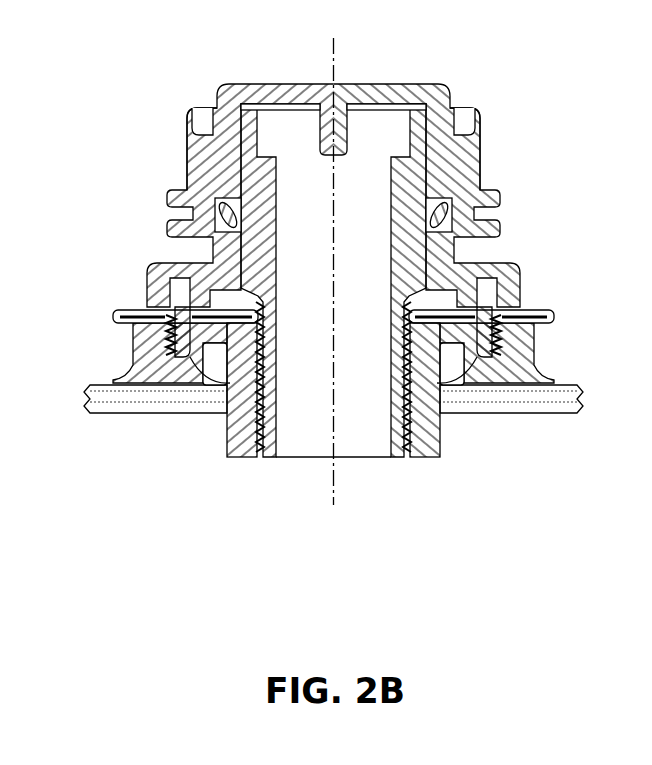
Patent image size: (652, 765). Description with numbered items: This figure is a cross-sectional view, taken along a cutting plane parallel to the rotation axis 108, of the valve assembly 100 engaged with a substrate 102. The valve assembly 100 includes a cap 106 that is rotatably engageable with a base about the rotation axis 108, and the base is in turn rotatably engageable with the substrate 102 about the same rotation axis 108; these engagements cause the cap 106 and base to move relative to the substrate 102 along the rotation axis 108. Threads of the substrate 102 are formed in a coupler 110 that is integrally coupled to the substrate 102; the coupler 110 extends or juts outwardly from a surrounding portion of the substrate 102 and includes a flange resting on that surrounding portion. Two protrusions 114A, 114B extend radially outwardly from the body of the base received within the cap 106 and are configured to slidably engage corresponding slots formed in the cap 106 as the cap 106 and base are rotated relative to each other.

The valve assembly 100 is at (316, 279).
The substrate 102 is at (120, 402).
The cap 106 is at (498, 160).
The rotation axis 108 is at (333, 41).
The coupler 110 is at (133, 350).
The protrusion 114A is at (217, 153).
The protrusion 114B is at (440, 160).